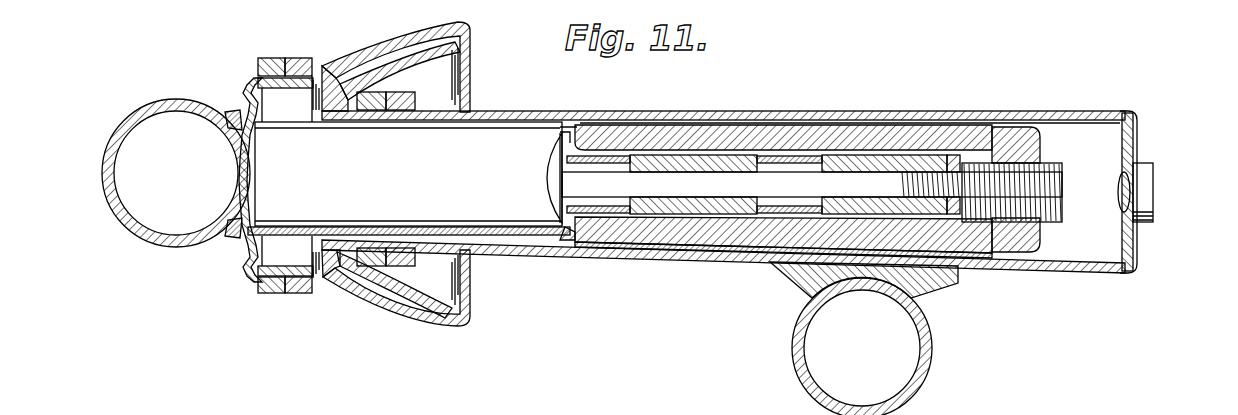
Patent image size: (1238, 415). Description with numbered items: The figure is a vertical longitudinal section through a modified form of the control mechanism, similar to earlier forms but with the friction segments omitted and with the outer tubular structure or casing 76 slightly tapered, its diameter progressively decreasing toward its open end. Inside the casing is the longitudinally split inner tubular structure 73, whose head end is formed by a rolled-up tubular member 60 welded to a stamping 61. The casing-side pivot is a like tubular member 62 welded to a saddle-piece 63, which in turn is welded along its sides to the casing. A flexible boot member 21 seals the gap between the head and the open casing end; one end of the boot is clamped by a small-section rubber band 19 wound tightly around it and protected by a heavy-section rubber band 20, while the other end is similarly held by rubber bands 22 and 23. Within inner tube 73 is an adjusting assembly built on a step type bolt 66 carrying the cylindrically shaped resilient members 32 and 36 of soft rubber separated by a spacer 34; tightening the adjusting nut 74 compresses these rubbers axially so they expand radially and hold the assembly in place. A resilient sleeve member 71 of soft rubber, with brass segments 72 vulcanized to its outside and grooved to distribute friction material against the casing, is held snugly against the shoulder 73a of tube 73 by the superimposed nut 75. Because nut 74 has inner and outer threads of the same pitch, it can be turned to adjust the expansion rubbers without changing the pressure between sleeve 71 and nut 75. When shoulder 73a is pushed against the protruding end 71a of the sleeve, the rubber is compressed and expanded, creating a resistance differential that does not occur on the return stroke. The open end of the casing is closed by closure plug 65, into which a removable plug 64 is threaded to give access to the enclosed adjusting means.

The rubber band 19 is at (268, 58).
The rubber band 20 is at (296, 58).
The boot member 21 is at (472, 75).
The rubber band 22 is at (368, 264).
The rubber band 23 is at (400, 265).
The cylindrically shaped resilient member 32 is at (850, 157).
The spacer 34 is at (590, 162).
The second cylindrically shaped resilient member 36 is at (690, 157).
The rolled-up tubular member 60 is at (124, 128).
The stamping 61 is at (251, 88).
The tubular member 62 is at (930, 375).
The saddle-piece 63 is at (943, 283).
The plug 64 is at (1150, 190).
The closure plug 65 is at (1137, 255).
The step type bolt 66 is at (555, 178).
The sleeve member 71 is at (890, 133).
The protruding end of sleeve 71a is at (563, 228).
The brass segments 72 is at (966, 114).
The inner tubular structure 73 is at (432, 180).
The shoulder 73a is at (562, 130).
The adjusting nut 74 is at (1065, 218).
The superimposed nut 75 is at (1040, 142).
The outer tubular structure or casing 76 is at (798, 111).